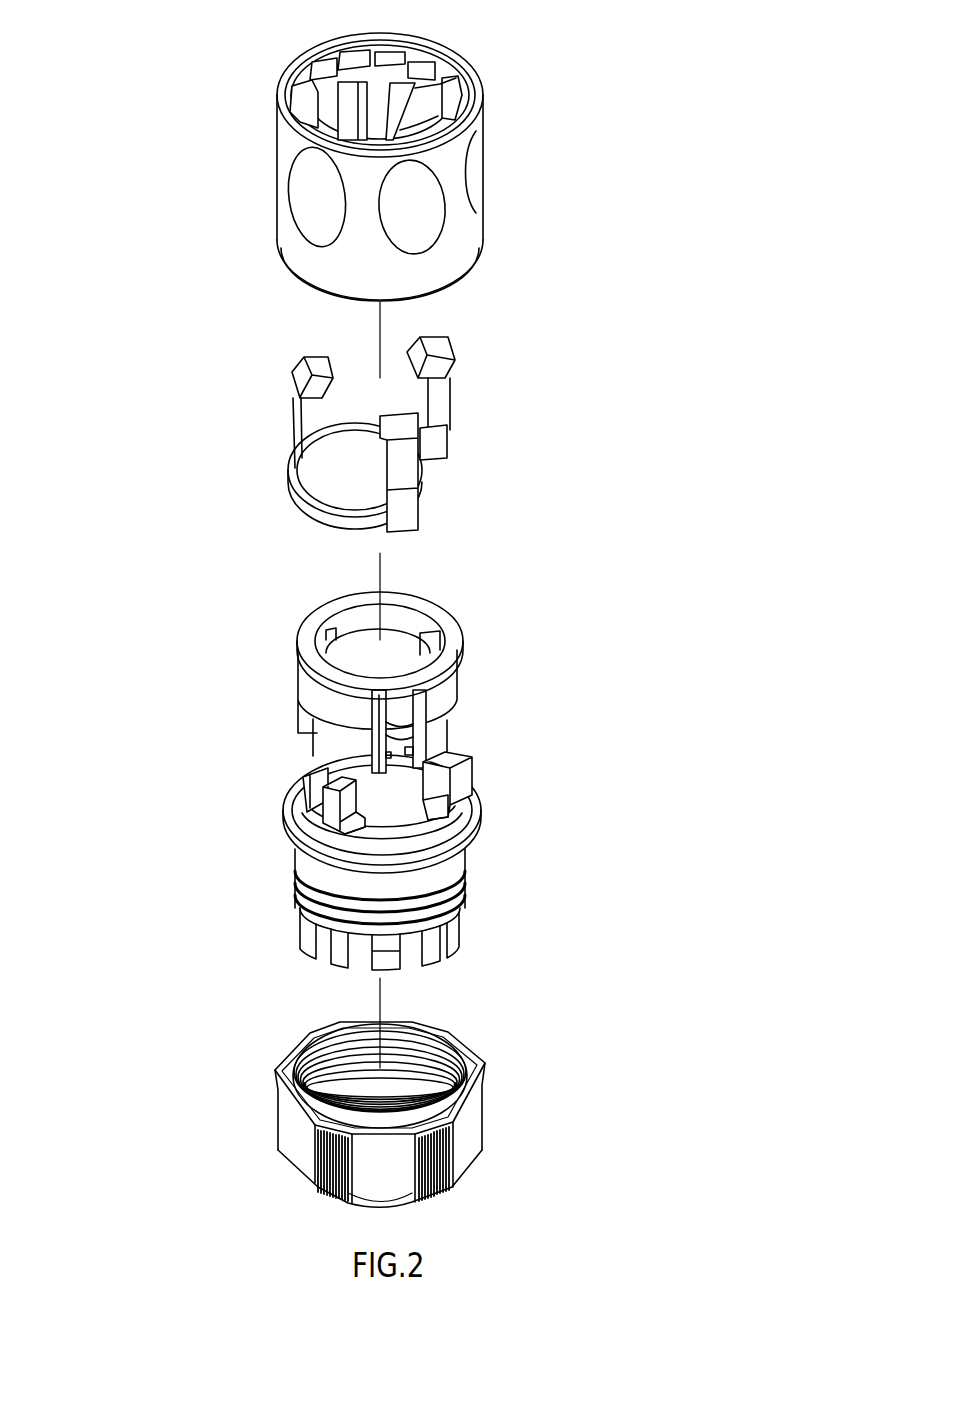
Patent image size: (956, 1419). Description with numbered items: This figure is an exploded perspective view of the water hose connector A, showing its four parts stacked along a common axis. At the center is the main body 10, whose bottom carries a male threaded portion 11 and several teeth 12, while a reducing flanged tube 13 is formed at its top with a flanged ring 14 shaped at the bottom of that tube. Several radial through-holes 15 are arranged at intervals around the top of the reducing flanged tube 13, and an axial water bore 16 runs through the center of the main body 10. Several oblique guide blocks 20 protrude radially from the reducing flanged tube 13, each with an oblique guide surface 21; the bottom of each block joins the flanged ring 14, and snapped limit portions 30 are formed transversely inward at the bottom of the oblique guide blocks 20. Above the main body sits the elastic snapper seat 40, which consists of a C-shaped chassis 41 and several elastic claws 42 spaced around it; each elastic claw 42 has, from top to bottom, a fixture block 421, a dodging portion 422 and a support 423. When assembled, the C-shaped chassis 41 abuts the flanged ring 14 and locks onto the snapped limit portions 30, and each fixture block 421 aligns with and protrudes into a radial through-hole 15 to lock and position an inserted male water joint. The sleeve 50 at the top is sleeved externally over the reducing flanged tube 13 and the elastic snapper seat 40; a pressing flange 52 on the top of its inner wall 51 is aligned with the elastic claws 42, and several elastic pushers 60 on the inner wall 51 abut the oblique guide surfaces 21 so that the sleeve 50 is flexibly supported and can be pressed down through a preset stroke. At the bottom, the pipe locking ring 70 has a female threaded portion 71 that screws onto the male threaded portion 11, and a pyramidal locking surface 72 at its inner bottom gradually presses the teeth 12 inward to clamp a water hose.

The main body 10 is at (214, 754).
The male threaded portion 11 is at (297, 885).
The teeth 12 is at (440, 958).
The reducing flanged tube 13 is at (443, 733).
The flanged ring 14 is at (468, 855).
The radial through-holes 15 is at (398, 660).
The axial water bore 16 is at (358, 656).
The oblique guide blocks 20 is at (308, 780).
The oblique guide surface 21 is at (283, 837).
The snapped limit portions 30 is at (282, 818).
The elastic snapper seat 40 is at (217, 410).
The C-shaped chassis 41 is at (303, 507).
The elastic claws 42 is at (557, 348).
The fixture block 421 is at (452, 375).
The dodging portion 422 is at (452, 386).
The support 423 is at (452, 432).
The sleeve 50 is at (214, 162).
The inner wall 51 is at (421, 126).
The pressing flange 52 is at (427, 83).
The elastic pushers 60 is at (318, 70).
The pipe locking ring 70 is at (217, 1062).
The female threaded portion 71 is at (413, 1057).
The pyramidal locking surface 72 is at (420, 1107).
The water hose connector A is at (694, 153).